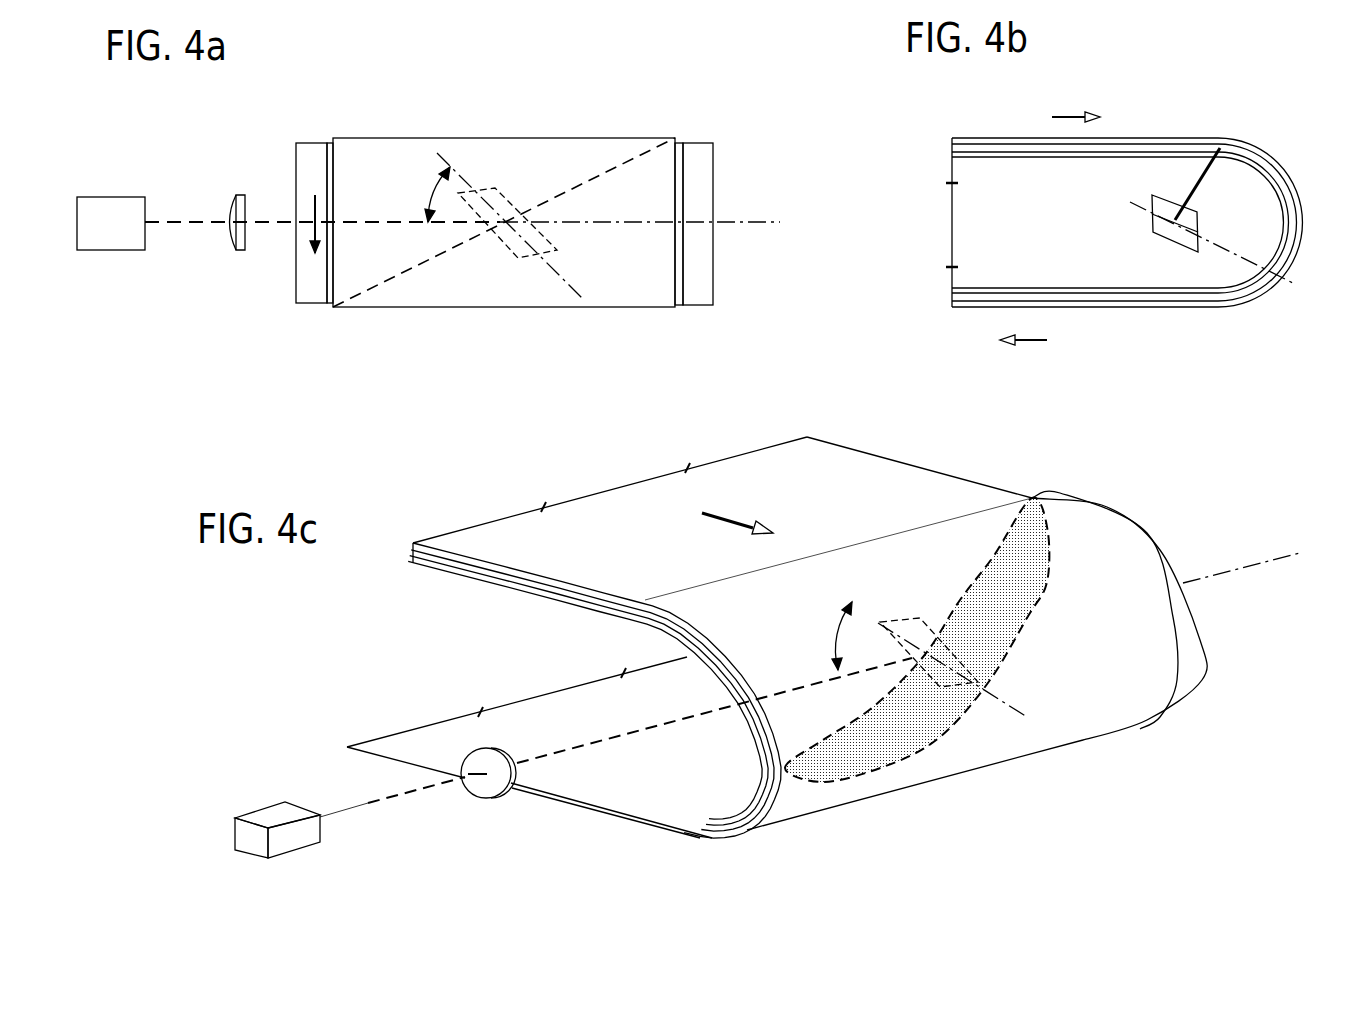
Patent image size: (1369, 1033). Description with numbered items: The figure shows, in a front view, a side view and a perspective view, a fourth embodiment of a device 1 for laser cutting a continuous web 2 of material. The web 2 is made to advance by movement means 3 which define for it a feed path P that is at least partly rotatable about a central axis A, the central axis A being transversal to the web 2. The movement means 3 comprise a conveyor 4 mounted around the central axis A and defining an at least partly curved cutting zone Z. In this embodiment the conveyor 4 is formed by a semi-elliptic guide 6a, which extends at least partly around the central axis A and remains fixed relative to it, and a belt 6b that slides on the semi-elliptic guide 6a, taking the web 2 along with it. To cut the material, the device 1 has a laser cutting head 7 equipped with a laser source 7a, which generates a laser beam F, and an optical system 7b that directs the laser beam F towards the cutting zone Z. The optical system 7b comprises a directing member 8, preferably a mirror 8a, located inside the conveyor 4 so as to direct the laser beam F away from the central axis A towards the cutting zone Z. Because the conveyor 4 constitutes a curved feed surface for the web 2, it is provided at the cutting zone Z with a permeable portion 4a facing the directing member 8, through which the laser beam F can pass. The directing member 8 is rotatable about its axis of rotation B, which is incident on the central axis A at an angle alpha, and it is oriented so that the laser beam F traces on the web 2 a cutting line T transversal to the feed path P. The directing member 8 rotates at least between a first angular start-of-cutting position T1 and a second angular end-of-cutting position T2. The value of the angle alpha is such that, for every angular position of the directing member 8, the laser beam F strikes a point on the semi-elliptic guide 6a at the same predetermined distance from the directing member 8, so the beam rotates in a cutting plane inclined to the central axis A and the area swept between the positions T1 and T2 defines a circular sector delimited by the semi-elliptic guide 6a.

In FIG. 4a, the device for laser cutting 1 is at (422, 188).
In FIG. 4b, the device for laser cutting 1 is at (1105, 208).
In FIG. 4a, the web of material 2 is at (355, 157).
In FIG. 4b, the web of material 2 is at (1005, 141).
In FIG. 4c, the web of material 2 is at (585, 493).
In FIG. 4a, the movement means 3 is at (272, 168).
In FIG. 4b, the movement means 3 is at (1007, 160).
In FIG. 4c, the movement means 3 is at (423, 588).
In FIG. 4a, the conveyor 4 is at (700, 310).
In FIG. 4b, the conveyor 4 is at (1115, 160).
In FIG. 4c, the conveyor 4 is at (518, 617).
In FIG. 4a, the permeable portion 4a is at (563, 193).
In FIG. 4a, the semi-elliptic guide 6a is at (317, 150).
In FIG. 4b, the semi-elliptic guide 6a is at (1057, 155).
In FIG. 4c, the semi-elliptic guide 6a is at (500, 587).
In FIG. 4a, the belt 6b is at (679, 143).
In FIG. 4b, the belt 6b is at (1152, 148).
In FIG. 4c, the belt 6b is at (543, 588).
In FIG. 4a, the laser cutting head 7 is at (161, 220).
In FIG. 4c, the laser cutting head 7 is at (376, 811).
In FIG. 4a, the laser source 7a is at (111, 223).
In FIG. 4c, the laser source 7a is at (270, 815).
In FIG. 4a, the optical system 7b is at (225, 255).
In FIG. 4c, the optical system 7b is at (500, 808).
In FIG. 4a, the directing member 8 is at (497, 190).
In FIG. 4b, the directing member 8 is at (1178, 247).
In FIG. 4c, the directing member 8 is at (918, 627).
In FIG. 4a, the mirror 8a is at (515, 205).
In FIG. 4b, the mirror 8a is at (1225, 243).
In FIG. 4c, the mirror 8a is at (903, 630).
In FIG. 4a, the central axis A is at (748, 220).
In FIG. 4c, the central axis A is at (1247, 563).
In FIG. 4a, the axis of rotation B is at (450, 165).
In FIG. 4b, the axis of rotation B is at (1222, 254).
In FIG. 4c, the axis of rotation B is at (878, 623).
In FIG. 4b, the laser beam F is at (1202, 170).
In FIG. 4c, the laser beam F is at (992, 557).
In FIG. 4a, the feed path P is at (302, 233).
In FIG. 4b, the feed path P is at (1063, 353).
In FIG. 4c, the feed path P is at (728, 520).
In FIG. 4a, the cutting line T is at (447, 253).
In FIG. 4c, the cutting line T is at (1047, 582).
In FIG. 4c, the first angular start-of-cutting position T1 is at (1007, 525).
In FIG. 4c, the second angular end-of-cutting position T2 is at (850, 713).
In FIG. 4a, the cutting zone Z is at (358, 268).
In FIG. 4b, the cutting zone Z is at (1282, 180).
In FIG. 4c, the cutting zone Z is at (1072, 528).
In FIG. 4a, the angle alpha is at (432, 194).
In FIG. 4c, the angle alpha is at (840, 642).